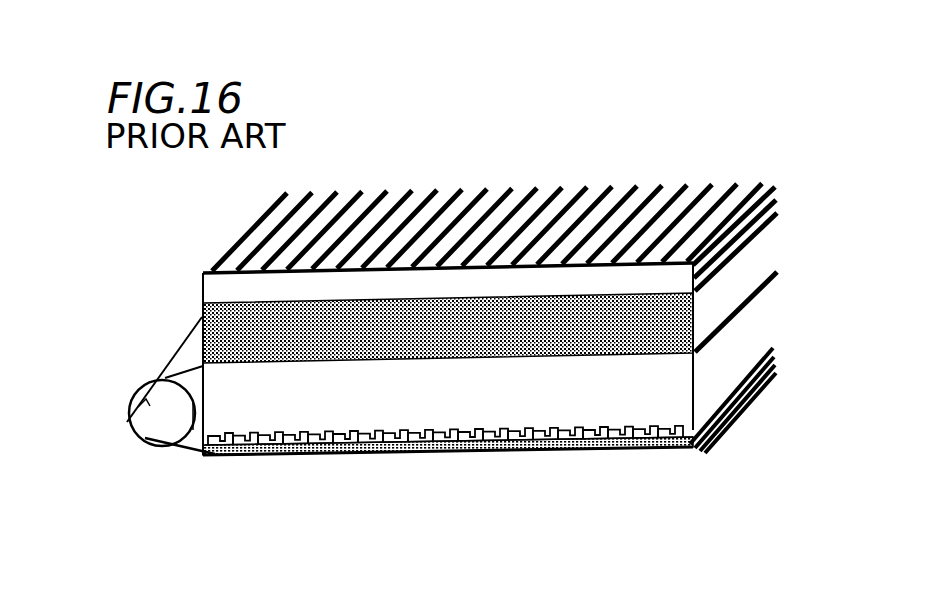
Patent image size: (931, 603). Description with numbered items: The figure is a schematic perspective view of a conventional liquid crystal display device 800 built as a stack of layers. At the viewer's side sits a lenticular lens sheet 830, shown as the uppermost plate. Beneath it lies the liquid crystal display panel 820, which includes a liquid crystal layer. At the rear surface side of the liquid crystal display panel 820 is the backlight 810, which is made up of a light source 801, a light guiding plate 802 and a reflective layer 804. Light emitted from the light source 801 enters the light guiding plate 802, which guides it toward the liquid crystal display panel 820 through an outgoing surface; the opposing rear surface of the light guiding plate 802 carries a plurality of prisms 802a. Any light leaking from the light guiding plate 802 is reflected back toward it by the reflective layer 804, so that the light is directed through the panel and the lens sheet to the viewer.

The liquid crystal display device 800 is at (688, 95).
The light source 801 is at (127, 422).
The light guiding plate 802 is at (670, 393).
The prisms 802a is at (497, 452).
The reflective layer 804 is at (348, 452).
The backlight 810 is at (88, 368).
The liquid crystal display panel 820 is at (160, 302).
The lenticular lens sheet 830 is at (750, 222).